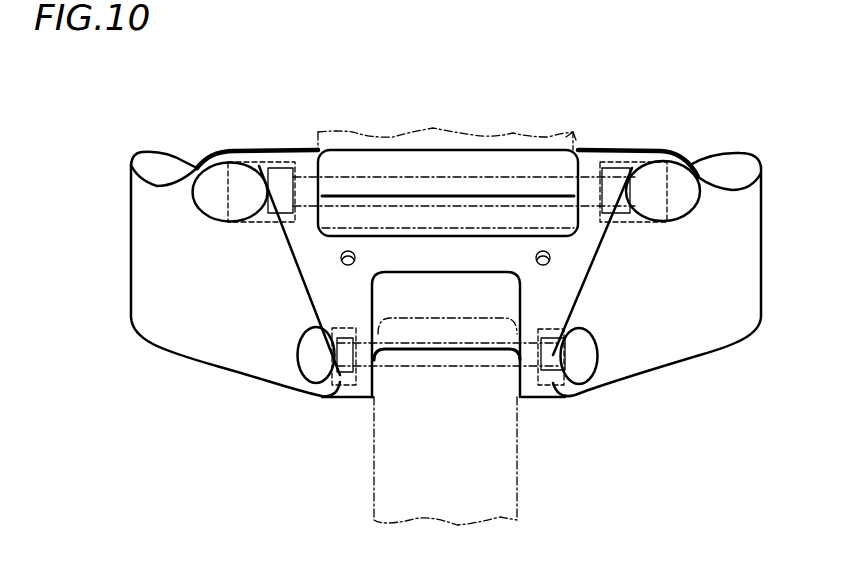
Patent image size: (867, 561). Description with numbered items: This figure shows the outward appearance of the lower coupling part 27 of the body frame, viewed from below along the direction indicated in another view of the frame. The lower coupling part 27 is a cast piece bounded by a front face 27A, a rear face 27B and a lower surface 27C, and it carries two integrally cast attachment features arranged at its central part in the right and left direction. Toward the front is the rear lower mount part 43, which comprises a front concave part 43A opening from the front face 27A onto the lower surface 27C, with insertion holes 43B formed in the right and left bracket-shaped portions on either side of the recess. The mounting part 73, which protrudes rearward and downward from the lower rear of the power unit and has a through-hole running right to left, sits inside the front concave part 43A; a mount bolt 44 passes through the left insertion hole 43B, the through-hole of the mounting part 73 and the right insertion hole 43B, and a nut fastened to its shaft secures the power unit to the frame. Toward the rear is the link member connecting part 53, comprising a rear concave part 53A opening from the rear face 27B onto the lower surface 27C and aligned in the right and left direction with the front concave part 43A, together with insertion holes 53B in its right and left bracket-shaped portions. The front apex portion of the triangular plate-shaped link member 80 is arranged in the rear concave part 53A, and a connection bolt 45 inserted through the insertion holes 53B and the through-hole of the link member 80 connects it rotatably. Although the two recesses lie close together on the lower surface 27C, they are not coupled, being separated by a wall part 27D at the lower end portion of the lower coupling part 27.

The lower coupling part 27 is at (145, 127).
The front face 27A is at (645, 148).
The rear face 27B is at (658, 373).
The lower surface 27C is at (333, 282).
The wall part 27D is at (420, 257).
The rear lower mount part 43 is at (338, 112).
The front concave part 43A is at (438, 217).
The insertion hole 43B is at (282, 158).
The mount bolt 44 is at (502, 180).
The mounting part 73 is at (585, 130).
The link member connecting part 53 is at (362, 412).
The rear concave part 53A is at (452, 303).
The insertion hole 53B is at (330, 360).
The connection bolt 45 is at (420, 358).
The link member 80 is at (517, 497).